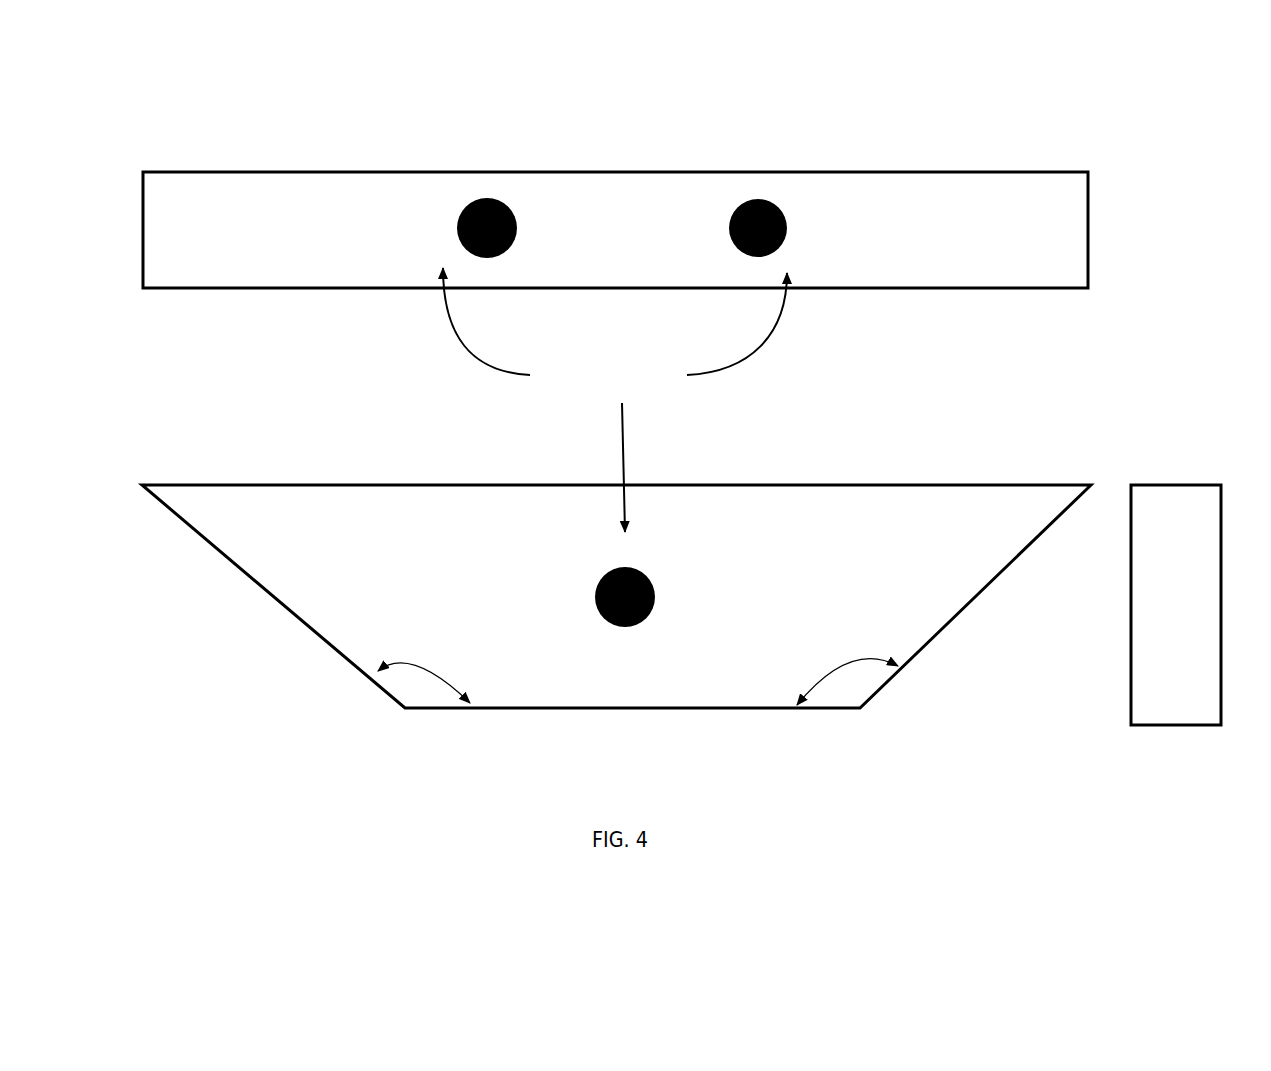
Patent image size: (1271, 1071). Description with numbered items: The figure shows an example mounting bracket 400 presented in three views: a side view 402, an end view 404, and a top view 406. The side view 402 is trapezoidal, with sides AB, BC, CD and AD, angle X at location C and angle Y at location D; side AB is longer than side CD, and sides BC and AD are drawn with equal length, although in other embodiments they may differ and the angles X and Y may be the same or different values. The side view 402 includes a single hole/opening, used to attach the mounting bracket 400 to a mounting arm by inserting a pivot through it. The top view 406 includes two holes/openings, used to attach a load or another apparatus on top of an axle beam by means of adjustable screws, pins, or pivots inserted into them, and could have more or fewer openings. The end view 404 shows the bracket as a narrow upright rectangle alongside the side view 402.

The mounting bracket 400 is at (716, 84).
The side view 402 is at (252, 455).
The end view 404 is at (1172, 457).
The top view 406 is at (1093, 145).